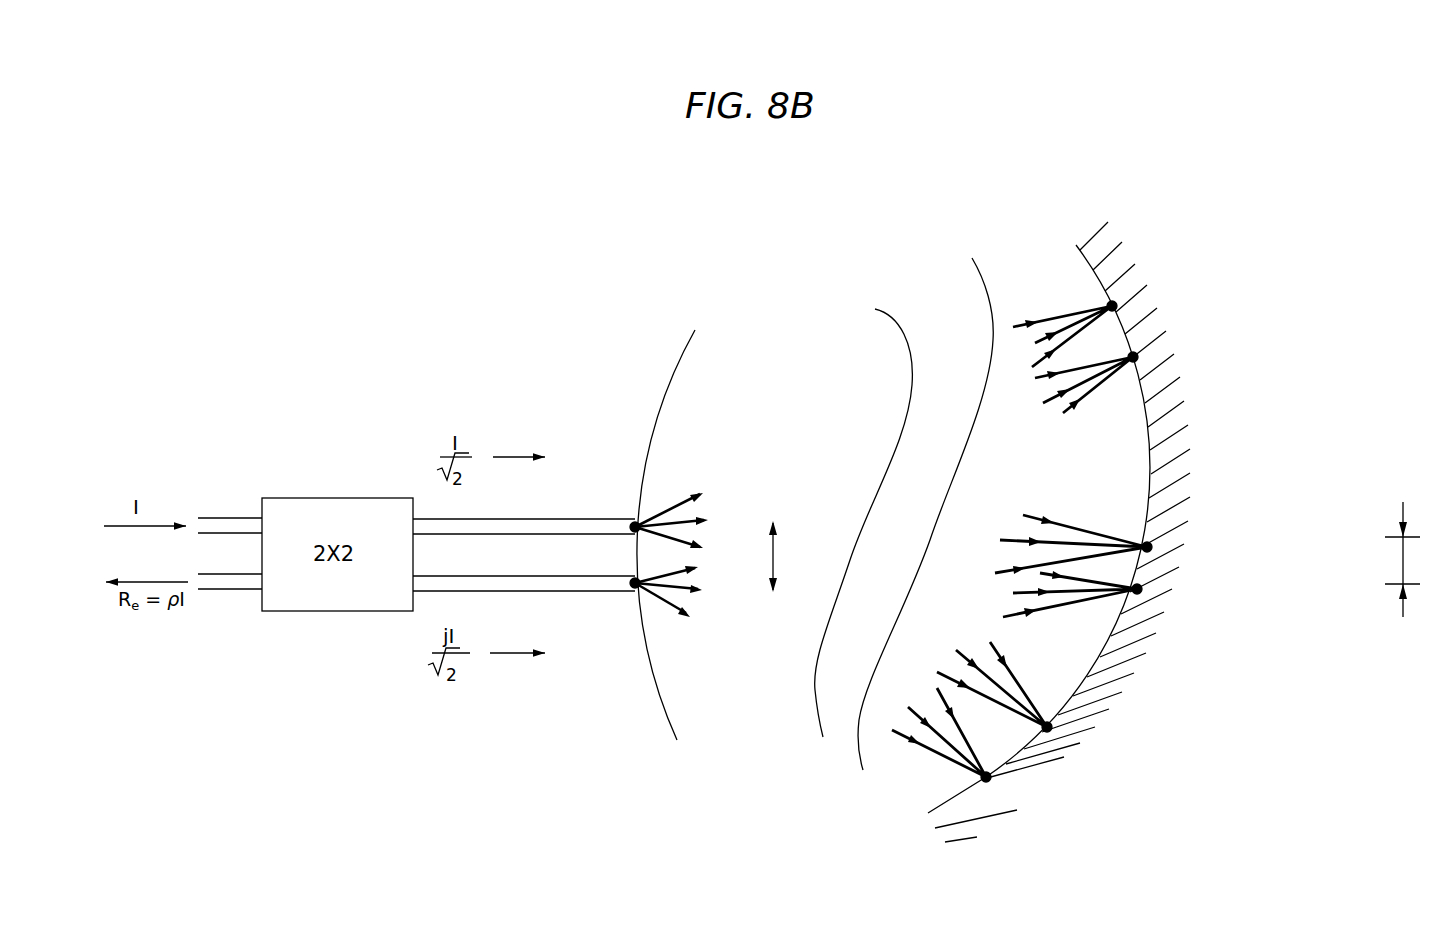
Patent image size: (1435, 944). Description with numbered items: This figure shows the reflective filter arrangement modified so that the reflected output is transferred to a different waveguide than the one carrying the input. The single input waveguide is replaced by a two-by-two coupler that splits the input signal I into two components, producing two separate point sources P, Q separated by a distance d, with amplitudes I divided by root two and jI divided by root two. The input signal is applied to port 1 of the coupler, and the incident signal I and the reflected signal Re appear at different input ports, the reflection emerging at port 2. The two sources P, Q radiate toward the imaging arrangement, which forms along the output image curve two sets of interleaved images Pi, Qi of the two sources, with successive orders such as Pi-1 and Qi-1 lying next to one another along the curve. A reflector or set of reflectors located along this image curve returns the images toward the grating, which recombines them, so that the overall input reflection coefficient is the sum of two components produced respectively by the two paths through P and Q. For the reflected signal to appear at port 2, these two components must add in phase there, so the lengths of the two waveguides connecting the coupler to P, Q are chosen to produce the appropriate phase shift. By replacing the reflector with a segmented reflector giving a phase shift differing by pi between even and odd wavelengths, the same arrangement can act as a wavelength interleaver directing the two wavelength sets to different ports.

The port 1 of the 2×2 coupler 1 is at (230, 511).
The port 2 of the 2×2 coupler 2 is at (230, 568).
The point source P is at (658, 516).
The point source Q is at (654, 595).
The image P(i−1) Pi-1 is at (1112, 306).
The image Q(i−1) Qi-1 is at (1133, 357).
The image Pi is at (1147, 547).
The image Qi is at (1137, 589).
The separation d is at (1094, 545).